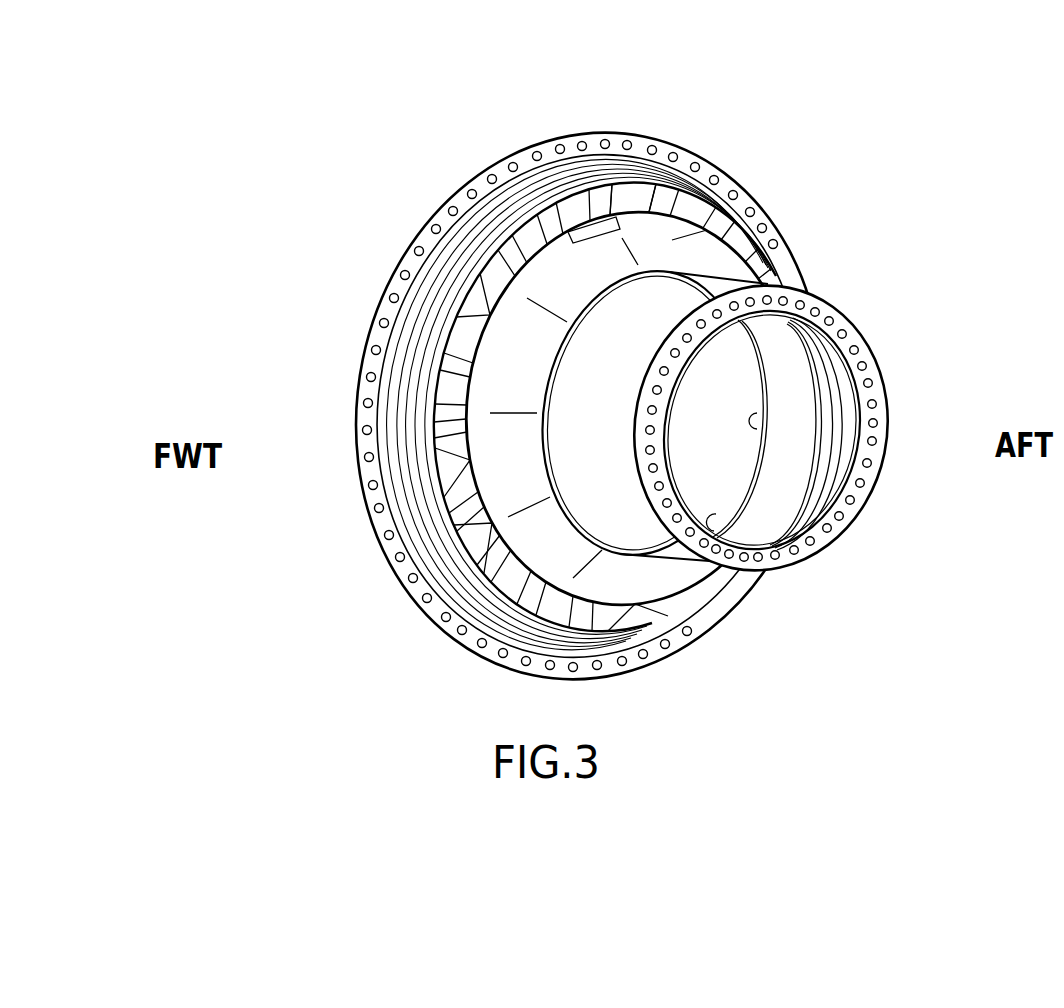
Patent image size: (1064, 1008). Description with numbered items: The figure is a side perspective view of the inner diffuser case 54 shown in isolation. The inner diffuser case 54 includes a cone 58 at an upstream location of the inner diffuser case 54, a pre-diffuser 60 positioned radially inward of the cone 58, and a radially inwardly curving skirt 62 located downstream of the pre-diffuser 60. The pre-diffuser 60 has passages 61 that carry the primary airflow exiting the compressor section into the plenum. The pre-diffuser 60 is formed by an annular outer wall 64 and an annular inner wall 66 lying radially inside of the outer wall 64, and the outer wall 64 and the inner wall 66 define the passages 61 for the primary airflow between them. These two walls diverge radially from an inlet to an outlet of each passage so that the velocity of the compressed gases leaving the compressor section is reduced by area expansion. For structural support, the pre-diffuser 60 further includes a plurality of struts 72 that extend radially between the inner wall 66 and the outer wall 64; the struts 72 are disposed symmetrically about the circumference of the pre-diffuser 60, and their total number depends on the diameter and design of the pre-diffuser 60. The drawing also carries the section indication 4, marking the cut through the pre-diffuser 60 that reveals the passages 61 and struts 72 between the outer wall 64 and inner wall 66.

The section line 4- 4 is at (618, 223).
The inner diffuser case 54 is at (678, 313).
The cone 58 is at (413, 360).
The pre-diffuser 60 is at (493, 257).
The passages 61 is at (665, 207).
The radially inwardly curving skirt 62 is at (670, 242).
The annular outer wall 64 is at (635, 180).
The annular inner wall 66 is at (427, 410).
The struts 72 is at (478, 288).